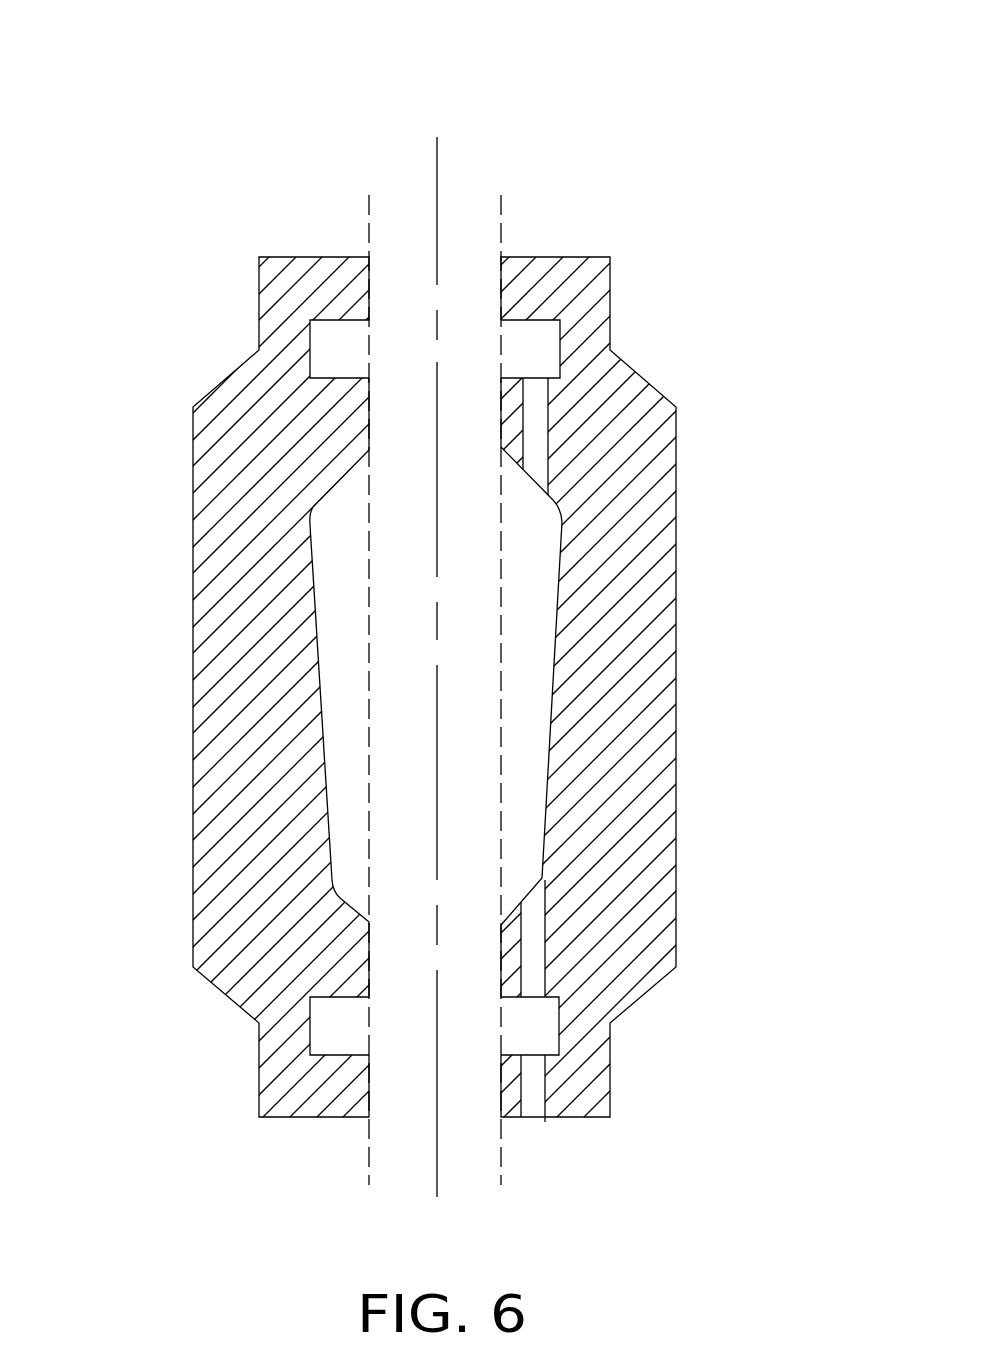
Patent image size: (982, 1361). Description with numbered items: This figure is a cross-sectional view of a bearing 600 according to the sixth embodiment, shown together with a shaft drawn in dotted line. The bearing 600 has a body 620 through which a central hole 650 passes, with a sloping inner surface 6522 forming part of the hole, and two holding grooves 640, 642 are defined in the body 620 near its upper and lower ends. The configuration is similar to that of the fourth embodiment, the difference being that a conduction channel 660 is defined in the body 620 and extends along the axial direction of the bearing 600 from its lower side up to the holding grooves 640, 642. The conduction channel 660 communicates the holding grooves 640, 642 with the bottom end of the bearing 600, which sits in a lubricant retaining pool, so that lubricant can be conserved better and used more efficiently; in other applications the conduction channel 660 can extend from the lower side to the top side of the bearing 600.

The bearing 600 is at (450, 28).
The body 620 is at (642, 535).
The holding groove 640 is at (332, 355).
The holding groove 642 is at (333, 1023).
The central hole 650 is at (337, 615).
The sloping inner surface 6522 is at (310, 697).
The conduction channel 660 is at (530, 962).